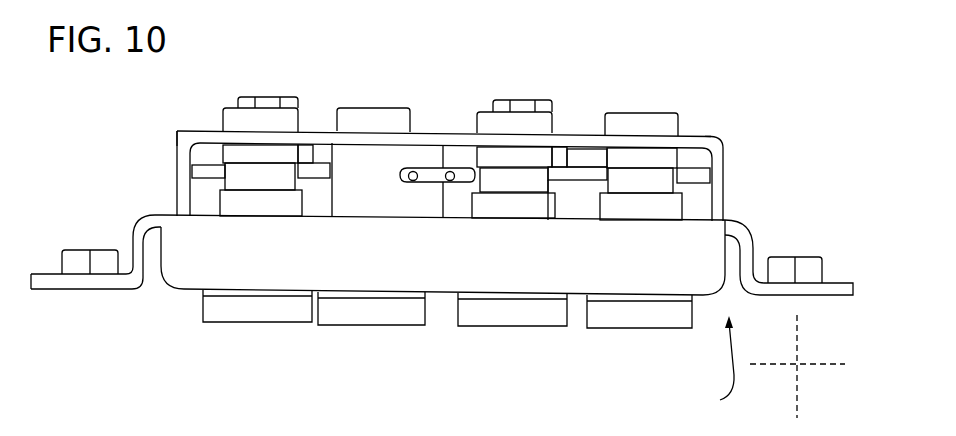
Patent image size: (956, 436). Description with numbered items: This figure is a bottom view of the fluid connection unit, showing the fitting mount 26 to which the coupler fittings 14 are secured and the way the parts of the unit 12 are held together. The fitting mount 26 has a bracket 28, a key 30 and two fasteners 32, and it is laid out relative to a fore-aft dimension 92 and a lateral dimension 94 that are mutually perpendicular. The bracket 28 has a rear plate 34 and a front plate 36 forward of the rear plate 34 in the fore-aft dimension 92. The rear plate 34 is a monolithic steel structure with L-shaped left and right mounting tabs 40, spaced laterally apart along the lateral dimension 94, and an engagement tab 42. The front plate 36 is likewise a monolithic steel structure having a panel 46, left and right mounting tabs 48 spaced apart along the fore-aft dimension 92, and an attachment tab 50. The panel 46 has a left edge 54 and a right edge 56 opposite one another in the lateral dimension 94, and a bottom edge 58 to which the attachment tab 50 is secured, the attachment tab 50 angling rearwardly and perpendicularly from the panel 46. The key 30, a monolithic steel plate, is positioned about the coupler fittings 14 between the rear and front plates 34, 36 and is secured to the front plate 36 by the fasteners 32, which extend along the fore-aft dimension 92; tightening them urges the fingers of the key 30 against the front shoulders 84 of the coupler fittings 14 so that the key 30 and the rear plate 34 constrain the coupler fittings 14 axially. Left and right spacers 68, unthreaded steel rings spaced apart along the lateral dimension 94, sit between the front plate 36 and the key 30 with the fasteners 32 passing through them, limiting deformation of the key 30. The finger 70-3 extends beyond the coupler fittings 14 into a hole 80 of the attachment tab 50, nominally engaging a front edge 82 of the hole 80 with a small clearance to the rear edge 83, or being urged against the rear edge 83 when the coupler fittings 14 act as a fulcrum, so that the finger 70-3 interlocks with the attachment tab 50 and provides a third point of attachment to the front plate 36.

The unit 12 is at (689, 76).
The coupler fittings 14 is at (290, 322).
The fitting mount 26 is at (709, 367).
The bracket 28 is at (135, 228).
The key 30 is at (575, 180).
The fasteners 32 is at (268, 97).
The rear plate 34 is at (752, 242).
The front plate 36 is at (697, 135).
The mounting tabs 40 is at (50, 283).
The engagement tab 42 is at (441, 282).
The panel 46 is at (635, 112).
The mounting tabs 48 is at (182, 172).
The attachment tab 50 is at (368, 167).
The left edge 54 is at (723, 142).
The right edge 56 is at (177, 135).
The bottom edge 58 is at (592, 136).
The spacers 68 is at (307, 150).
The finger 70-3 is at (463, 162).
The hole 80 is at (415, 183).
The front edge 82 is at (440, 183).
The rear edge 83 is at (455, 183).
The front shoulders 84 is at (262, 170).
The fore-aft dimension 92 is at (797, 388).
The lateral dimension 94 is at (818, 363).